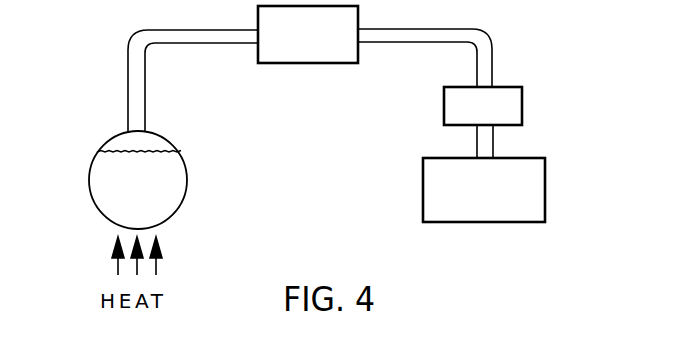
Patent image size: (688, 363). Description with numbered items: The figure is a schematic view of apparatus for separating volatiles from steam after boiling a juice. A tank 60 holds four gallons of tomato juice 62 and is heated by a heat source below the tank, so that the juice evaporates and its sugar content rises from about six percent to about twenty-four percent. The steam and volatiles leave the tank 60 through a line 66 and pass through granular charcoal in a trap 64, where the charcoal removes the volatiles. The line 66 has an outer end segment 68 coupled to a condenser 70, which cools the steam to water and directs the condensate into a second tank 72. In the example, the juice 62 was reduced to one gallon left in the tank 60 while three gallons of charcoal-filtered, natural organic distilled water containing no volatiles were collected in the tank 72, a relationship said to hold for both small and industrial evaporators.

The tank 60 is at (184, 167).
The tomato juice 62 is at (101, 182).
The trap 64 is at (294, 63).
The line 66 is at (145, 106).
The outer end segment 68 is at (492, 53).
The condenser 70 is at (511, 87).
The tank 72 is at (545, 184).